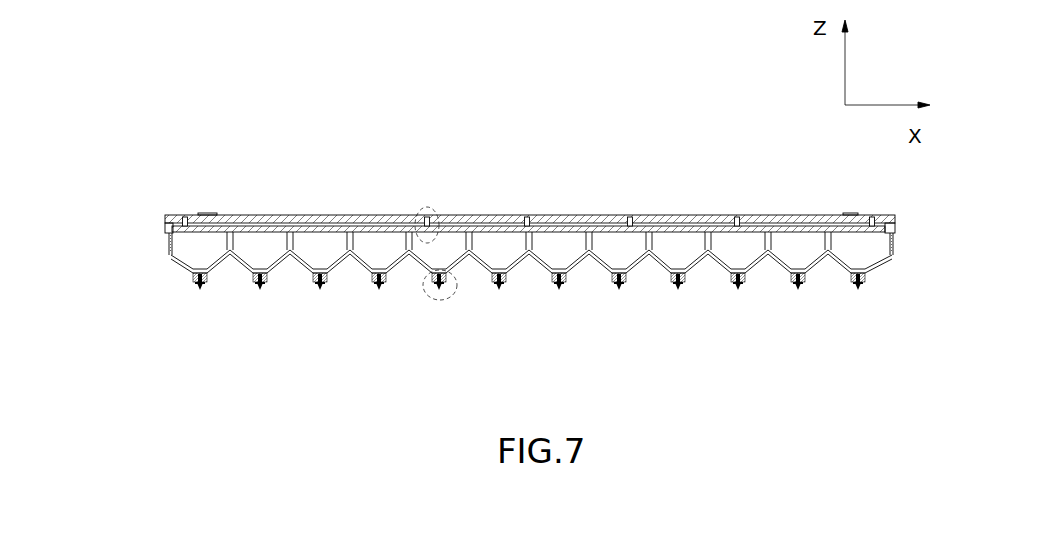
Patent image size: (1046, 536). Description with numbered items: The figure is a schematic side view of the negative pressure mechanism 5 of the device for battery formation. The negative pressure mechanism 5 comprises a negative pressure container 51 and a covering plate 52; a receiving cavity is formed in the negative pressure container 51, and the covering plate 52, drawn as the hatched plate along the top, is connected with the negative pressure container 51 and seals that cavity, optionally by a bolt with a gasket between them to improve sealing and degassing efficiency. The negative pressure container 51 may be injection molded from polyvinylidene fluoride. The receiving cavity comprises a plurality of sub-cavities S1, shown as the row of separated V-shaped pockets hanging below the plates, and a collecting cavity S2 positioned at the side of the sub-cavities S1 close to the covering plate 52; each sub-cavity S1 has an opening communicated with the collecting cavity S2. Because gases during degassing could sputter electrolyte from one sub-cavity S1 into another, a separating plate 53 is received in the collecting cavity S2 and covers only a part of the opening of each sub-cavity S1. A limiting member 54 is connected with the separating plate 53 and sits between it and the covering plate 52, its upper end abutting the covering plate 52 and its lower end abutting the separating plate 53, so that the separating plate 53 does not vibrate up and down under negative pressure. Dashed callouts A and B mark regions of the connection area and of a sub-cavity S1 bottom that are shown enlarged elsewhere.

The negative pressure mechanism 5 is at (148, 149).
The negative pressure container 51 is at (170, 246).
The covering plate 52 is at (295, 215).
The separating plate 53 is at (363, 232).
The limiting member 54 is at (740, 218).
The sub-cavity S1 is at (218, 259).
The collecting cavity S2 is at (590, 227).
The detail region A is at (440, 213).
The detail region B is at (425, 299).